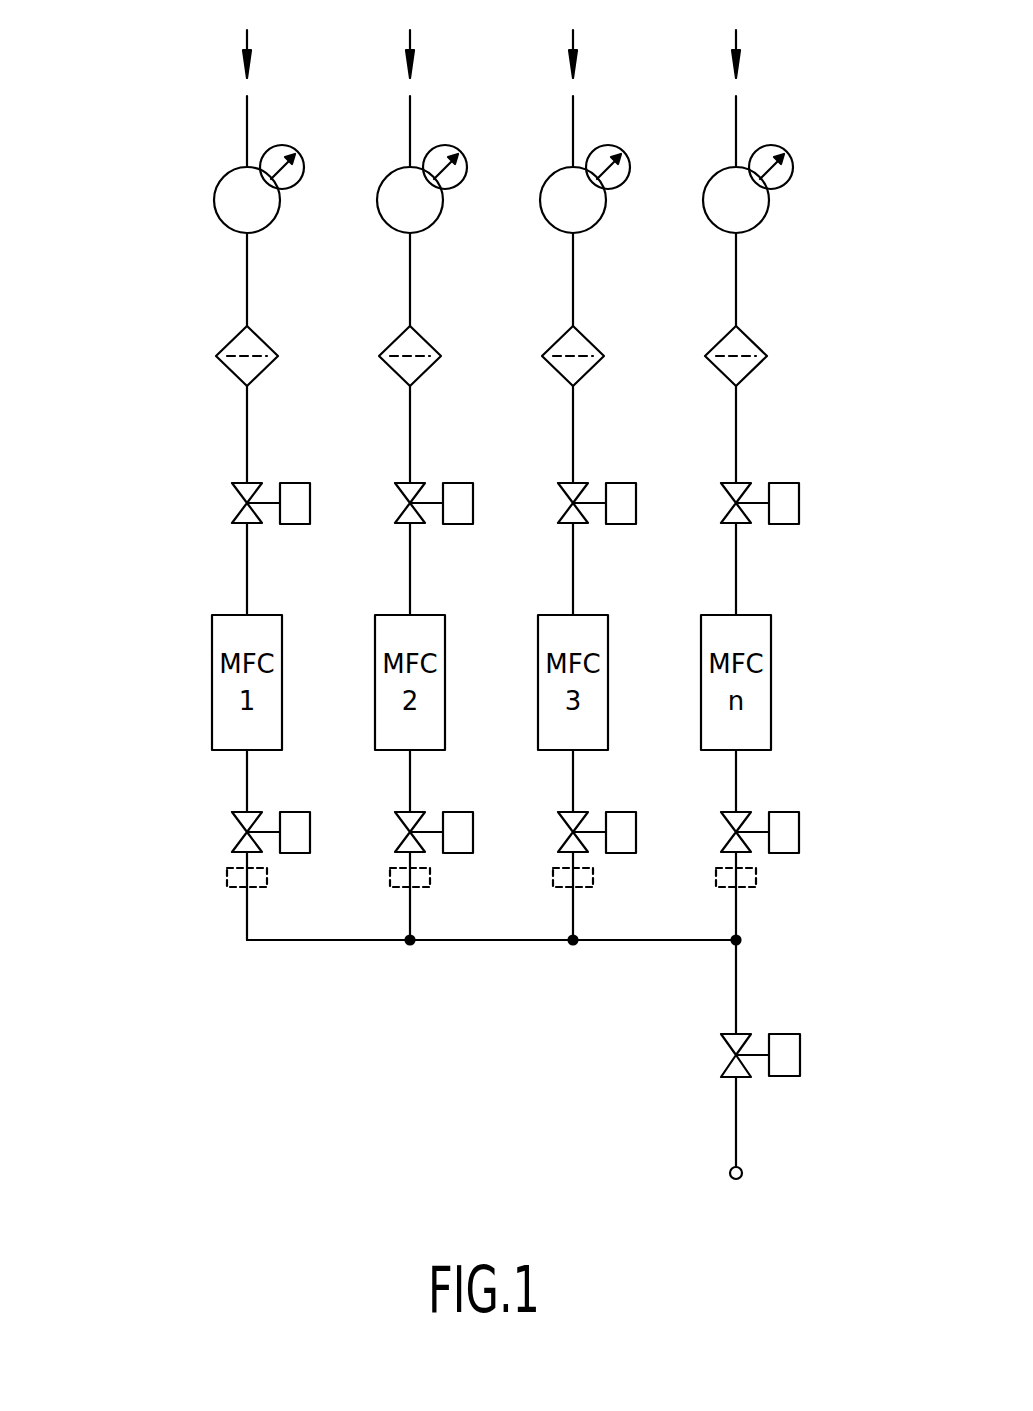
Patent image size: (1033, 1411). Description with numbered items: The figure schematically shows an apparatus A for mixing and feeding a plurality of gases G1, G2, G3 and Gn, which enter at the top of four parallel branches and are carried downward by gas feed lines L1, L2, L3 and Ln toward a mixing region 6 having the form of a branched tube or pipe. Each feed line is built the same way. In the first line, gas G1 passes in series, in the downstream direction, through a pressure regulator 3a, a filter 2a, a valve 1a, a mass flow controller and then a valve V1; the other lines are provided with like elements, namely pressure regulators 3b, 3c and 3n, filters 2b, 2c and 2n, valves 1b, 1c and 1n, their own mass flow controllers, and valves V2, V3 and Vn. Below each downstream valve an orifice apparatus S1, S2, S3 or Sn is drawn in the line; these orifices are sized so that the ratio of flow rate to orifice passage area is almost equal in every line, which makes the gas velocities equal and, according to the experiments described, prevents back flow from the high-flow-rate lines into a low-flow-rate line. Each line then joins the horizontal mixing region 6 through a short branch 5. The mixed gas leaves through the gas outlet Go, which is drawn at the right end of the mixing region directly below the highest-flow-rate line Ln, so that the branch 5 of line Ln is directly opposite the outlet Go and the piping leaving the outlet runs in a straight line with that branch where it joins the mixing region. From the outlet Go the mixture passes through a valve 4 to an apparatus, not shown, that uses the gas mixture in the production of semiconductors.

The gas G1 is at (247, 38).
The gas G2 is at (453, 46).
The gas G3 is at (616, 46).
The gas Gn is at (779, 46).
The pressure regulator 3a is at (215, 186).
The pressure regulator 3b is at (409, 173).
The pressure regulator 3c is at (572, 173).
The pressure regulator 3n is at (735, 173).
The filter 2a is at (235, 345).
The filter 2b is at (389, 325).
The filter 2c is at (552, 325).
The filter 2n is at (715, 325).
The valve 1a is at (240, 483).
The valve 1b is at (407, 468).
The valve 1c is at (570, 468).
The valve 1n is at (733, 468).
The gas feed line L1 is at (247, 573).
The gas feed line L2 is at (371, 569).
The gas feed line L3 is at (534, 569).
The gas feed line Ln is at (697, 569).
The valve V1 is at (243, 830).
The valve V2 is at (400, 813).
The valve V3 is at (563, 813).
The valve Vn is at (726, 813).
The orifice apparatus S1 is at (270, 878).
The orifice apparatus S2 is at (427, 904).
The orifice apparatus S3 is at (590, 904).
The orifice apparatus Sn is at (781, 883).
The branch tube 5 is at (247, 903).
The mixing region 6 is at (333, 942).
The gas outlet Go is at (752, 942).
The valve 4 is at (800, 1058).
The apparatus for mixing and feeding gases A is at (122, 322).